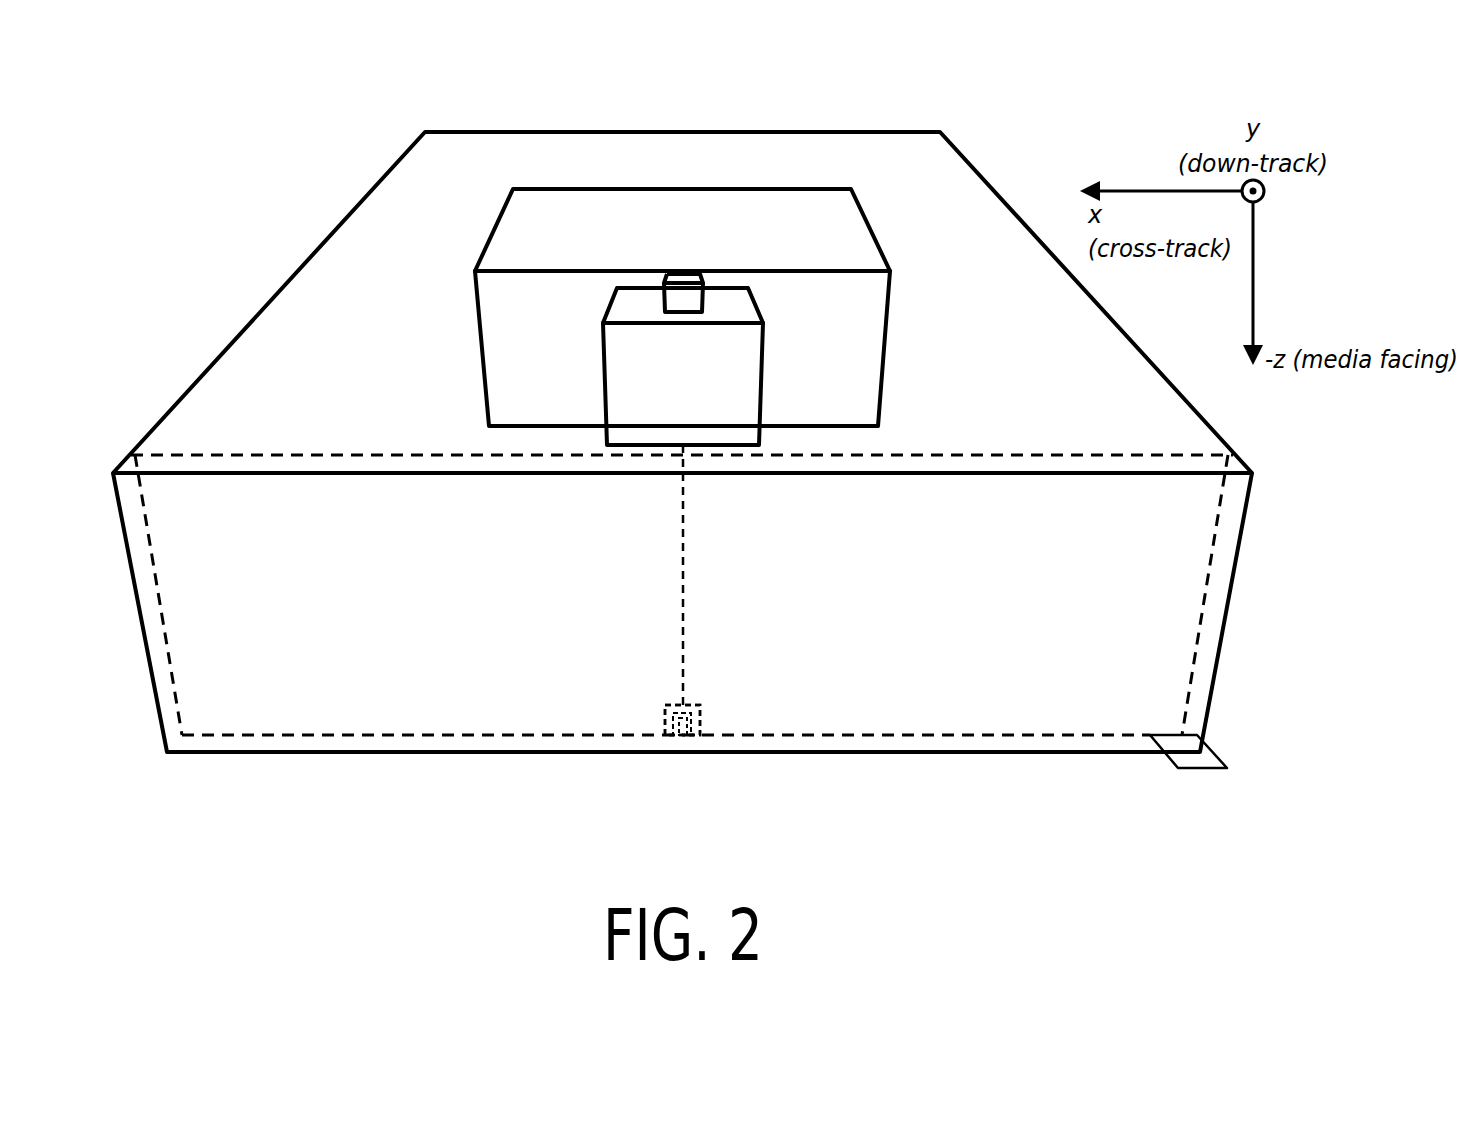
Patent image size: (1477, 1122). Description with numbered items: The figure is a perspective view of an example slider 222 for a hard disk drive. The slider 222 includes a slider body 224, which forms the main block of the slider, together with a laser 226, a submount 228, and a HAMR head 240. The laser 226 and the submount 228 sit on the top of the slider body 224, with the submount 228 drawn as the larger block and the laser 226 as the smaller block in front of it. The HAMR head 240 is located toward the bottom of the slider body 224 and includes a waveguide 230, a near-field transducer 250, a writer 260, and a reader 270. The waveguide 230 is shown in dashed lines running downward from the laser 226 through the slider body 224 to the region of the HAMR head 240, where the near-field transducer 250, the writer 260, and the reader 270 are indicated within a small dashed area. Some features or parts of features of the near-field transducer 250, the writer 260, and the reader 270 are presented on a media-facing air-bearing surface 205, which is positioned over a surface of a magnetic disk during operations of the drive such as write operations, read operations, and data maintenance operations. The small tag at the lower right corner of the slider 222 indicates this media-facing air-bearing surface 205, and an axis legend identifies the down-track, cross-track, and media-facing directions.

The slider 222 is at (285, 160).
The slider body 224 is at (937, 188).
The laser 226 is at (745, 390).
The submount 228 is at (495, 348).
The waveguide 230 is at (683, 619).
The HAMR head 240 is at (708, 686).
The near-field transducer 250 is at (688, 735).
The writer 260 is at (695, 718).
The reader 270 is at (672, 718).
The media-facing air-bearing surface 205 is at (1205, 760).